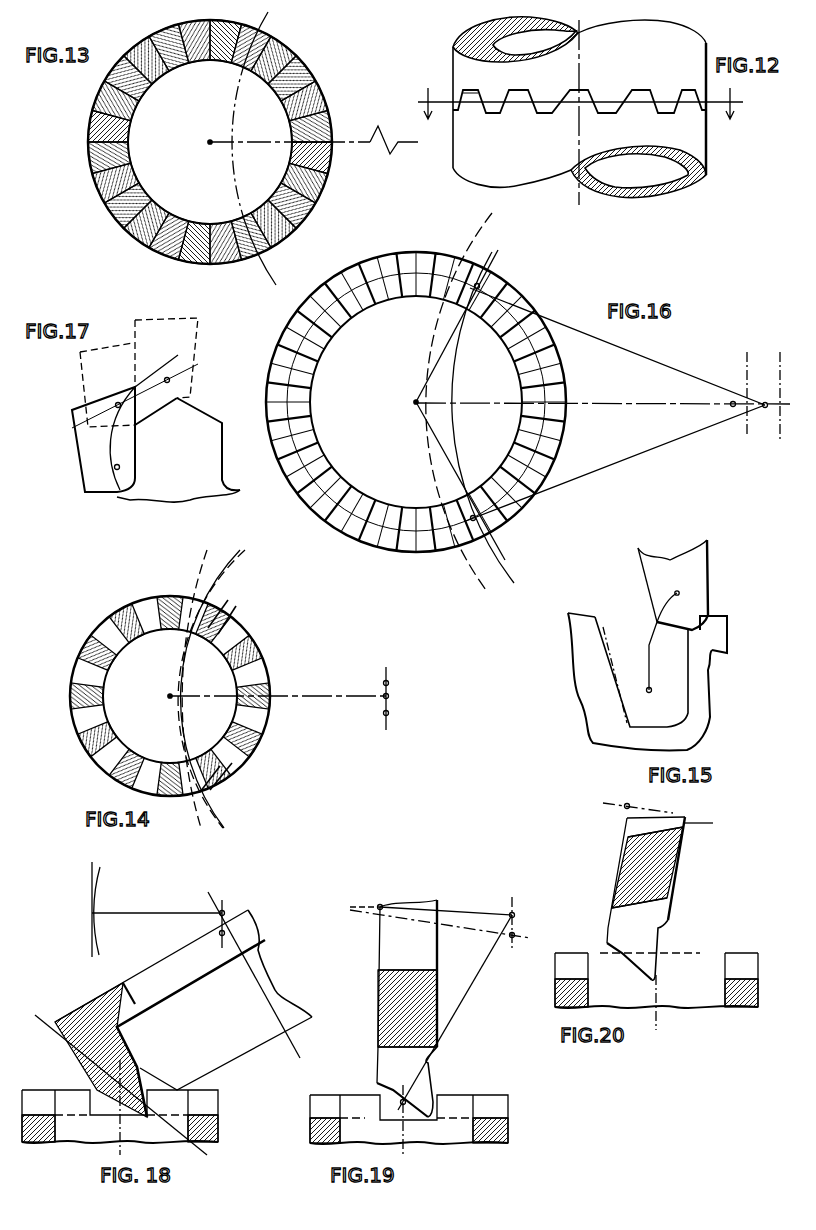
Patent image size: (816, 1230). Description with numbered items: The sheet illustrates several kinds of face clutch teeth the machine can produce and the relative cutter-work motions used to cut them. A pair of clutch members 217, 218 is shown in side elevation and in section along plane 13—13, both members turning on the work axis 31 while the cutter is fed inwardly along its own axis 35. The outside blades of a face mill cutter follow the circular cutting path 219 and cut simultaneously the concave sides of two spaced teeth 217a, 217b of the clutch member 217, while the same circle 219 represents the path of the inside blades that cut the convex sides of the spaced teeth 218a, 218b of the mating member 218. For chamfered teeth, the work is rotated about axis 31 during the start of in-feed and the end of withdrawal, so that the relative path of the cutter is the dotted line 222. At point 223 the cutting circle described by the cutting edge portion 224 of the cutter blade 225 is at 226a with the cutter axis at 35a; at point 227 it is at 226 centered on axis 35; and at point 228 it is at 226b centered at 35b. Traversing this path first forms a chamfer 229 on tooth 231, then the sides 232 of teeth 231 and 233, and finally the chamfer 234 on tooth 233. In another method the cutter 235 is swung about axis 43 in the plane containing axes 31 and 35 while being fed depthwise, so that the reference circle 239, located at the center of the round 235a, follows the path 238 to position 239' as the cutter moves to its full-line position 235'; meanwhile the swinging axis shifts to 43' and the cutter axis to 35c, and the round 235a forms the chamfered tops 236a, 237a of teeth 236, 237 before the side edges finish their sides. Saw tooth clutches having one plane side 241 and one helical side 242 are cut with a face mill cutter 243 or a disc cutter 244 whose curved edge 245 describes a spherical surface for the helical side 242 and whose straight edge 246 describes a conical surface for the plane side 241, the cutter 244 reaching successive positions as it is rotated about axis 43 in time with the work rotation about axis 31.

In FIG. 12, the section plane 13 is at (580, 116).
In FIG. 13, the work axis 31 is at (209, 140).
In FIG. 12, the work axis 31 is at (580, 62).
In FIG. 16, the work axis 31 is at (412, 398).
In FIG. 14, the work axis 31 is at (169, 695).
In FIG. 18, the work axis 31 is at (116, 1146).
In FIG. 19, the work axis 31 is at (406, 1126).
In FIG. 20, the work axis 31 is at (660, 1020).
In FIG. 13, the cutter axis 35 is at (412, 148).
In FIG. 16, the cutter axis 35 is at (766, 402).
In FIG. 14, the cutter axis 35 is at (388, 696).
In FIG. 18, the cutter axis 35 is at (272, 948).
In FIG. 19, the cutter axis 35 is at (508, 914).
In FIG. 20, the cutter axis 35 is at (706, 826).
In FIG. 14, the cutter axis position 35a is at (388, 714).
In FIG. 14, the cutter axis position 35b is at (388, 682).
In FIG. 16, the shifted cutter axis position 35c is at (732, 406).
In FIG. 16, the swinging axis 43 is at (762, 405).
In FIG. 18, the swinging axis 43 is at (196, 960).
In FIG. 19, the swinging axis 43 is at (440, 909).
In FIG. 20, the swinging axis 43 is at (616, 821).
In FIG. 16, the shifted swinging axis position 43' is at (723, 392).
In FIG. 12, the clutch member 217 is at (670, 70).
In FIG. 13, the tooth 217a is at (242, 52).
In FIG. 13, the tooth 217b is at (258, 256).
In FIG. 12, the mating clutch member 218 is at (517, 155).
In FIG. 13, the tooth 218a is at (278, 46).
In FIG. 13, the tooth 218b is at (281, 237).
In FIG. 13, the circular cutting path 219 is at (276, 268).
In FIG. 15, the relative cutter path 222 is at (627, 613).
In FIG. 15, the path point 223 is at (636, 606).
In FIG. 15, the cutting edge portion 224 is at (707, 618).
In FIG. 15, the cutter blade 225 is at (706, 546).
In FIG. 14, the cutting circle 226 is at (240, 560).
In FIG. 14, the cutting circle 226a is at (226, 578).
In FIG. 14, the cutting circle 226b is at (225, 805).
In FIG. 15, the path point 227 is at (652, 690).
In FIG. 15, the path point 228 is at (680, 592).
In FIG. 14, the chamfer 229 is at (224, 618).
In FIG. 14, the tooth 231 is at (238, 624).
In FIG. 15, the tooth sides 232 is at (690, 660).
In FIG. 14, the tooth 233 is at (218, 776).
In FIG. 15, the tooth 233 is at (697, 713).
In FIG. 14, the chamfer 234 is at (206, 798).
In FIG. 15, the chamfer 234 is at (728, 626).
In FIG. 17, the cutter 235 is at (149, 373).
In FIG. 17, the cutter full-line position 235' is at (80, 431).
In FIG. 17, the round 235a is at (180, 397).
In FIG. 17, the tooth 236 is at (210, 448).
In FIG. 16, the tooth 236 is at (492, 516).
In FIG. 17, the chamfered top surface 236a is at (150, 402).
In FIG. 16, the chamfered top surface 236a is at (470, 508).
In FIG. 16, the tooth 237 is at (499, 288).
In FIG. 16, the chamfered top surface 237a is at (486, 256).
In FIG. 17, the reference circle path 238 is at (113, 434).
In FIG. 17, the reference circle 239 is at (143, 376).
In FIG. 16, the reference circle 239 is at (482, 417).
In FIG. 17, the reference circle final position 239' is at (97, 515).
In FIG. 16, the reference circle final position 239' is at (448, 401).
In FIG. 18, the plane tooth side 241 is at (86, 1088).
In FIG. 19, the plane tooth side 241 is at (431, 1088).
In FIG. 20, the plane tooth side 241 is at (655, 954).
In FIG. 18, the helical tooth side 242 is at (110, 1110).
In FIG. 19, the helical tooth side 242 is at (376, 1084).
In FIG. 18, the face mill cutter 243 is at (86, 1070).
In FIG. 19, the disc cutter 244 is at (388, 992).
In FIG. 20, the disc cutter 244 is at (666, 900).
In FIG. 18, the curved edge 245 is at (128, 1066).
In FIG. 20, the curved edge 245 is at (606, 946).
In FIG. 18, the straight edge 246 is at (136, 1082).
In FIG. 19, the straight edge 246 is at (434, 1056).